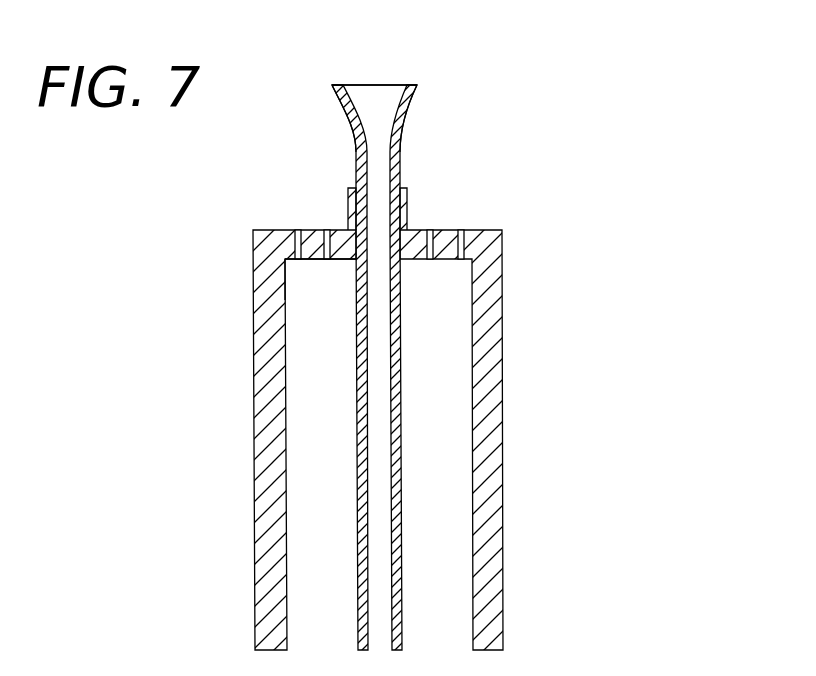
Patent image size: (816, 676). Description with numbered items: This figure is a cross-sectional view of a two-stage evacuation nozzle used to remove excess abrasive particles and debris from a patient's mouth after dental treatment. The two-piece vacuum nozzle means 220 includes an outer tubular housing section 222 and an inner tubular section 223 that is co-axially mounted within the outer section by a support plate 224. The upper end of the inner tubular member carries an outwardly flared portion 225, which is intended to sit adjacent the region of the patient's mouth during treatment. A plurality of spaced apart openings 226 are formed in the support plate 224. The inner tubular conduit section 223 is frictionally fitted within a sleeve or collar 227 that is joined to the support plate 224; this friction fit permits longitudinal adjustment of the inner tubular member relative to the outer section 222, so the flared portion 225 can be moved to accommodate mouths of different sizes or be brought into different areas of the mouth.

The vacuum nozzle means 220 is at (446, 344).
The outer tubular housing section 222 is at (503, 327).
The inner tubular section 223 is at (400, 433).
The support plate 224 is at (317, 262).
The outwardly flared portion 225 is at (420, 90).
The spaced apart openings 226 is at (326, 230).
The sleeve or collar 227 is at (407, 202).